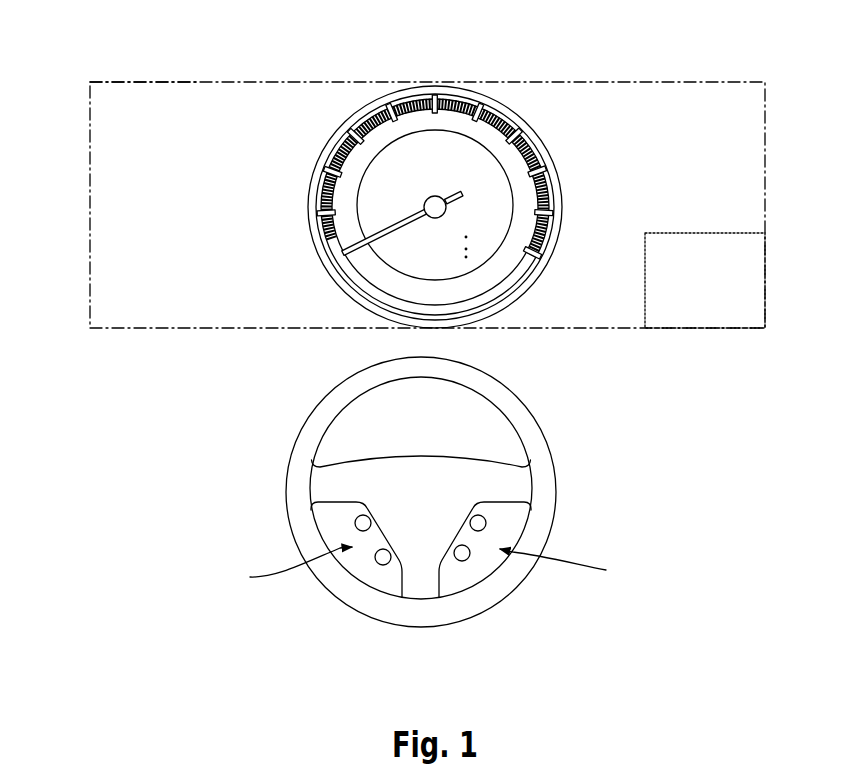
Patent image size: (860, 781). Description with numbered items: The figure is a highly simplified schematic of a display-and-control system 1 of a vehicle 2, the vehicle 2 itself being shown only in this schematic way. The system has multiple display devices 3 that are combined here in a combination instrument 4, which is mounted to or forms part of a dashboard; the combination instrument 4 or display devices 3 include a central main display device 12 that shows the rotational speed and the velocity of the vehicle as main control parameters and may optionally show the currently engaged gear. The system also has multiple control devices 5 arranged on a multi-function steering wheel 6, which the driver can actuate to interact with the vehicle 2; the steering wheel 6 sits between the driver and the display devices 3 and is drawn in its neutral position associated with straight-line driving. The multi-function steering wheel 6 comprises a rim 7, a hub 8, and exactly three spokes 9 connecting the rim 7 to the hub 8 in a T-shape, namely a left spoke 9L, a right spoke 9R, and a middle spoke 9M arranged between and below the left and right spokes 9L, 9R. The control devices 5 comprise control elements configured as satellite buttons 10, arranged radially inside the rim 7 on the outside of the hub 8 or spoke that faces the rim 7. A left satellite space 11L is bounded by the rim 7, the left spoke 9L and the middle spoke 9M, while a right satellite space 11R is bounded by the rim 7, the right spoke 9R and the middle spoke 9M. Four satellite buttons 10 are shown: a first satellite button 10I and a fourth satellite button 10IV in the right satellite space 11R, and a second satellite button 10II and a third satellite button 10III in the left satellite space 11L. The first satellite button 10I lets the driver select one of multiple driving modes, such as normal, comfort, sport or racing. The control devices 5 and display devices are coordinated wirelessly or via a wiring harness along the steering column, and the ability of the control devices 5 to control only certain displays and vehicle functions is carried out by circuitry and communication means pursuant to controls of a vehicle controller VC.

The display-and-control system 1 is at (90, 53).
The vehicle 2 is at (170, 414).
The display devices 3 is at (505, 75).
The combination instrument 4 is at (290, 77).
The central main display device 12 is at (404, 77).
The control devices 5 is at (426, 569).
The multi-function steering wheel 6 is at (558, 448).
The rim 7 is at (523, 420).
The hub 8 is at (428, 465).
The spokes 9 is at (490, 554).
The left spoke 9L is at (348, 483).
The right spoke 9R is at (513, 490).
The middle spoke 9M is at (422, 577).
The satellite buttons 10 is at (404, 556).
The first satellite button 10I is at (486, 523).
The second satellite button 10II is at (355, 522).
The third satellite button 10III is at (376, 561).
The fourth satellite button 10IV is at (468, 559).
The left satellite space 11L is at (342, 538).
The right satellite space 11R is at (460, 578).
The vehicle controller VC is at (705, 280).